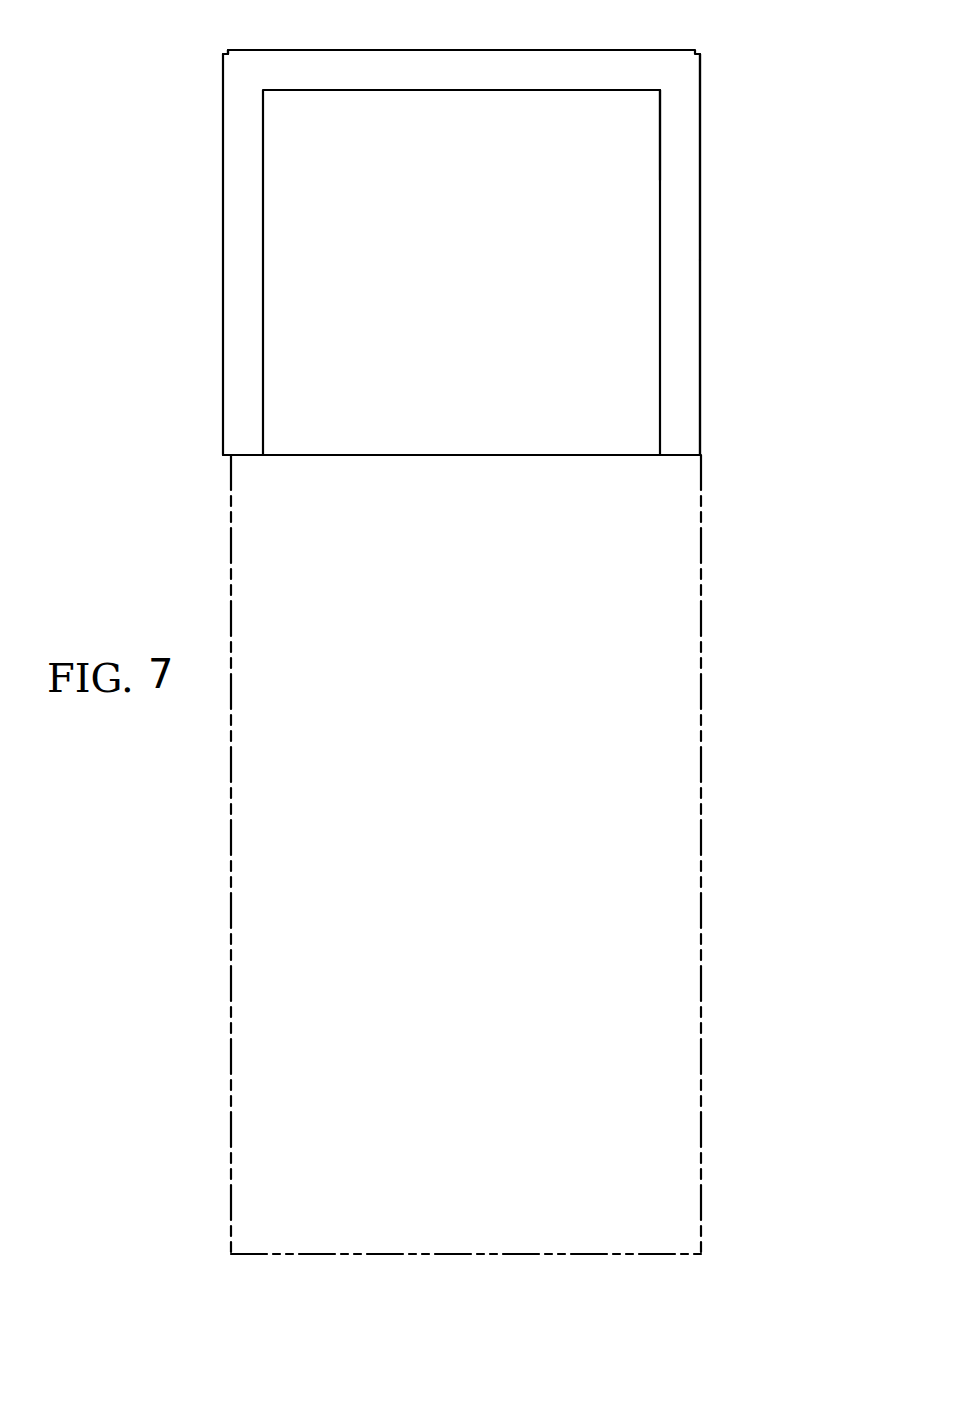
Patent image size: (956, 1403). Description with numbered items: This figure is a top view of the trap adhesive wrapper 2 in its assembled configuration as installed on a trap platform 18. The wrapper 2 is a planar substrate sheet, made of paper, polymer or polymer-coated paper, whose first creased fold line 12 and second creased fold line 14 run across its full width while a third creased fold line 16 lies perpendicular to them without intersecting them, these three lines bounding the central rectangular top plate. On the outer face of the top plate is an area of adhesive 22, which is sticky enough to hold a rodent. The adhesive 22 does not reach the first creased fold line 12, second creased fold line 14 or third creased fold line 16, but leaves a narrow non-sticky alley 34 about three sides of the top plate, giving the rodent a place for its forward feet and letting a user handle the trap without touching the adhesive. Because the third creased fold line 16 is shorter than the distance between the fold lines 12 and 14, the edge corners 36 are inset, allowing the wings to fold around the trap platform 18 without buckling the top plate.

The trap adhesive wrapper 2 is at (460, 456).
The first creased fold line 12 is at (225, 343).
The second creased fold line 14 is at (705, 322).
The third creased fold line 16 is at (470, 50).
The trap platform 18 is at (662, 680).
The area of adhesive 22 is at (626, 165).
The non-sticky alley 34 is at (695, 231).
The edge corners 36 is at (228, 57).